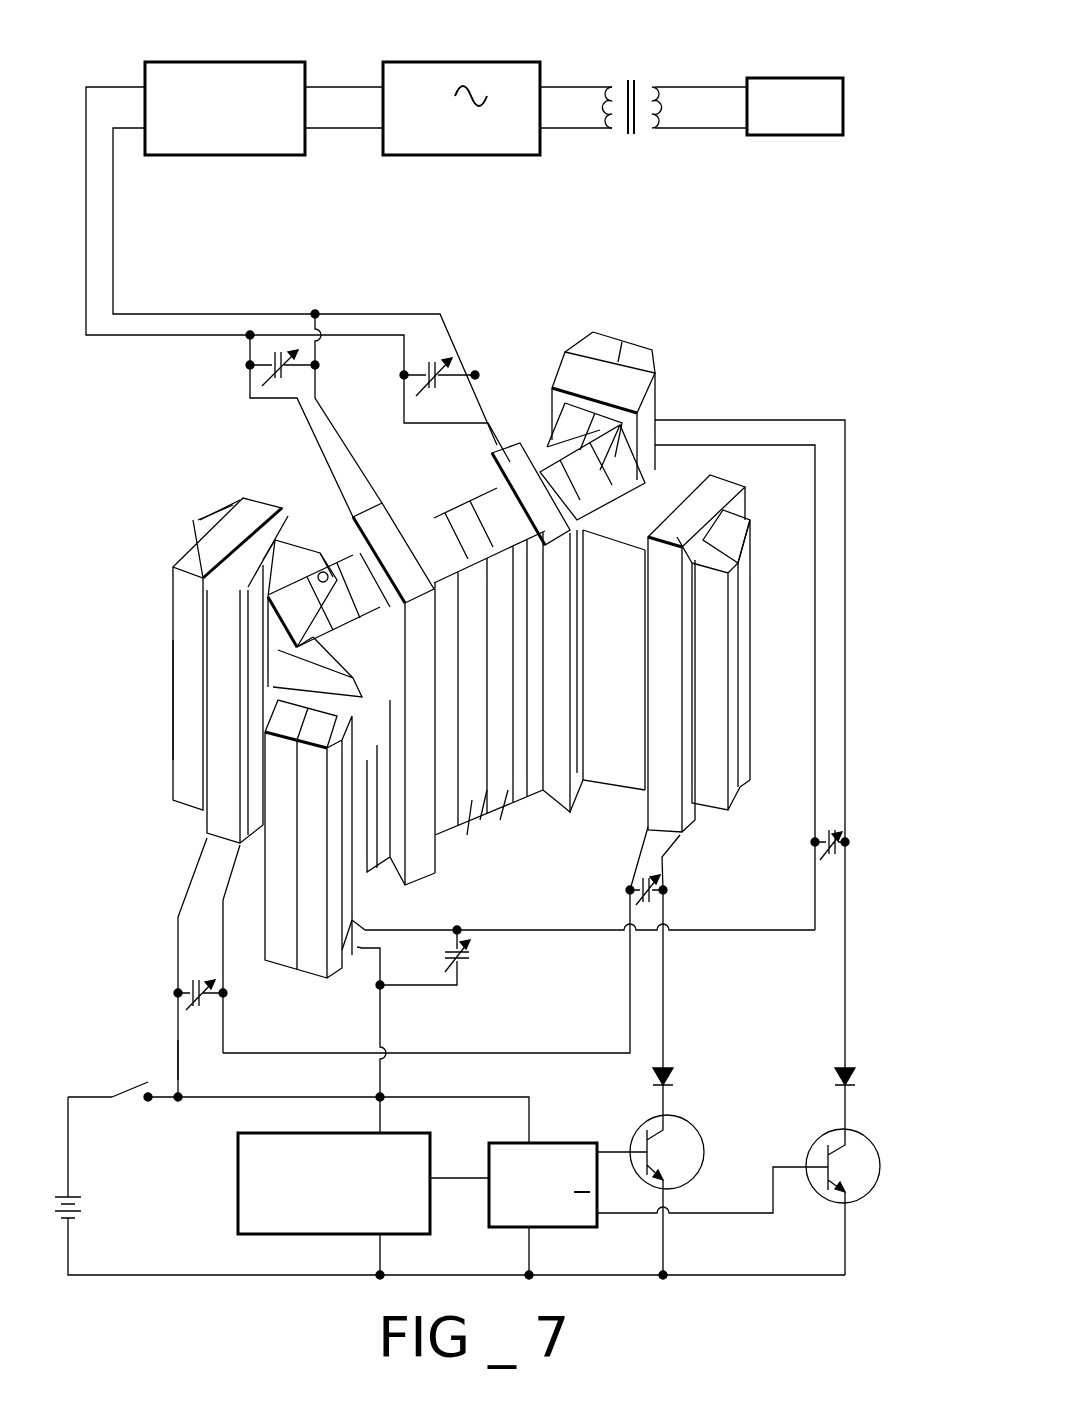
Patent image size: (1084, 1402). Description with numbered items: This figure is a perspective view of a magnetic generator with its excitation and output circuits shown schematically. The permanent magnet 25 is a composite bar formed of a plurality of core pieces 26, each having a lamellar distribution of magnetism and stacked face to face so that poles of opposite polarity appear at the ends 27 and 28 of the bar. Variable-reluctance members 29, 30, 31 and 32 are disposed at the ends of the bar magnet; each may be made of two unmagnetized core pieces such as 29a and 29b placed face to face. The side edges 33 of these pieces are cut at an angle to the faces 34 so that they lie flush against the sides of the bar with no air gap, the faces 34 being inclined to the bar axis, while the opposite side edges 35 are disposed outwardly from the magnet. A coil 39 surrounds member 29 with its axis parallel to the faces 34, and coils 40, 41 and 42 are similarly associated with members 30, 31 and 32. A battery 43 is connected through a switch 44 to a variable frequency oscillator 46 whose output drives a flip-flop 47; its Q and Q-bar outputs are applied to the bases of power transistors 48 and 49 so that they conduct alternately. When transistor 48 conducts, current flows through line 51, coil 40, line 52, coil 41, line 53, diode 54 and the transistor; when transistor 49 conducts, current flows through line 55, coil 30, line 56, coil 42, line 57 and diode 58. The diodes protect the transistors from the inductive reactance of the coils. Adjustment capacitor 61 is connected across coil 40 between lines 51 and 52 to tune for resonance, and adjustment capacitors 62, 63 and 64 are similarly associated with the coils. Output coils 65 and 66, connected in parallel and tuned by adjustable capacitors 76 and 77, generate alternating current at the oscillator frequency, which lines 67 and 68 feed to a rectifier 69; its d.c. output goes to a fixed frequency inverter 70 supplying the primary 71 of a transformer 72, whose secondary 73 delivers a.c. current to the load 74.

The permanent magnet 25 is at (434, 514).
The core pieces 26 is at (517, 805).
The end of the bar 27 is at (628, 486).
The end of the bar 28 is at (270, 630).
The variable-reluctance member 29 is at (182, 542).
The core piece 29a is at (185, 590).
The core piece 29b is at (206, 514).
The variable-reluctance member 30 is at (282, 968).
The variable-reluctance member 31 is at (752, 640).
The variable-reluctance member 32 is at (665, 355).
The side edges 33 is at (336, 574).
The faces 34 is at (257, 793).
The side edges 35 is at (728, 795).
The coil 39 is at (231, 485).
The coil 40 is at (357, 915).
The coil 41 is at (690, 498).
The coil 42 is at (575, 370).
The battery 43 is at (82, 1198).
The switch 44 is at (130, 1088).
The variable frequency oscillator 46 is at (238, 1176).
The flip-flop 47 is at (494, 1142).
The power transistor 48 is at (692, 1195).
The power transistor 49 is at (825, 1194).
The line 51 is at (178, 1036).
The line 52 is at (470, 1052).
The line 53 is at (664, 982).
The diode 54 is at (650, 1078).
The line 55 is at (380, 1020).
The line 56 is at (602, 929).
The line 57 is at (840, 992).
The diode 58 is at (832, 1078).
The adjustment capacitor 61 is at (180, 984).
The adjustment capacitor 62 is at (464, 974).
The adjustment capacitor 63 is at (662, 888).
The adjustment capacitor 64 is at (820, 856).
The output coil 65 is at (370, 520).
The output coil 66 is at (512, 468).
The line 67 is at (86, 260).
The line 68 is at (113, 244).
The rectifier 69 is at (280, 62).
The fixed frequency inverter 70 is at (490, 62).
The primary 71 is at (604, 107).
The transformer 72 is at (636, 82).
The secondary 73 is at (660, 107).
The load 74 is at (824, 78).
The adjustable tuning capacitor 76 is at (258, 378).
The adjustable tuning capacitor 77 is at (456, 382).